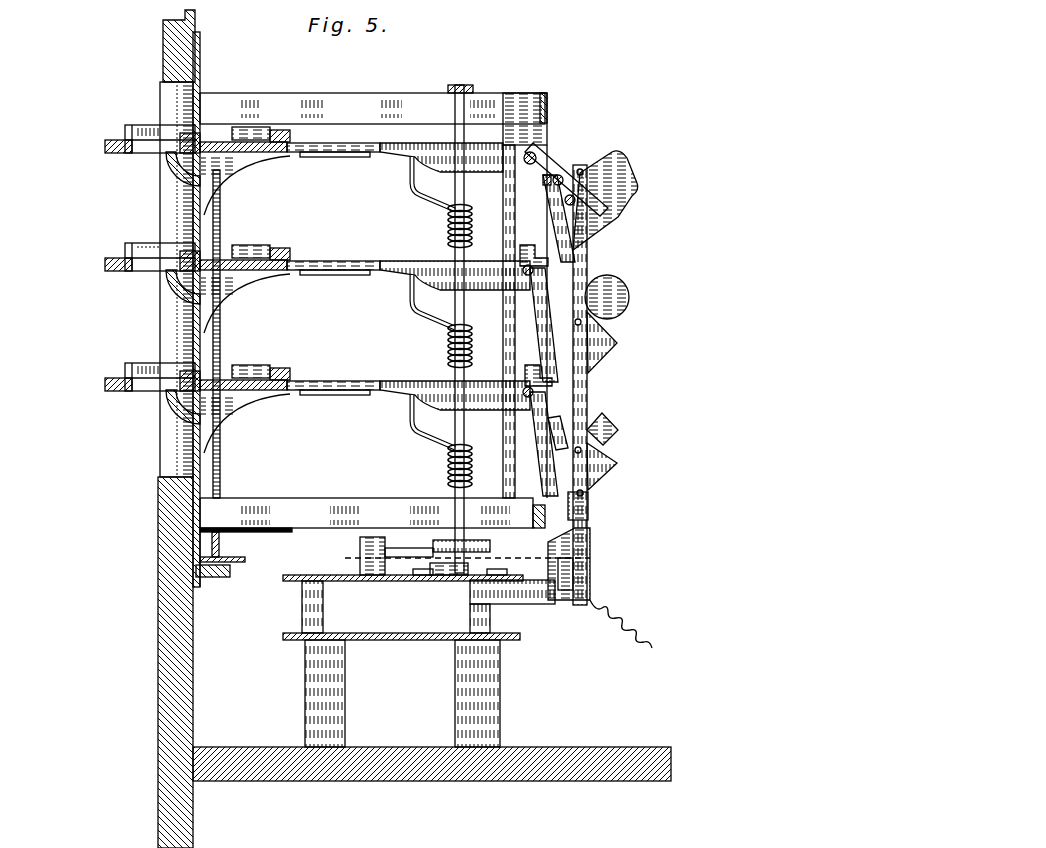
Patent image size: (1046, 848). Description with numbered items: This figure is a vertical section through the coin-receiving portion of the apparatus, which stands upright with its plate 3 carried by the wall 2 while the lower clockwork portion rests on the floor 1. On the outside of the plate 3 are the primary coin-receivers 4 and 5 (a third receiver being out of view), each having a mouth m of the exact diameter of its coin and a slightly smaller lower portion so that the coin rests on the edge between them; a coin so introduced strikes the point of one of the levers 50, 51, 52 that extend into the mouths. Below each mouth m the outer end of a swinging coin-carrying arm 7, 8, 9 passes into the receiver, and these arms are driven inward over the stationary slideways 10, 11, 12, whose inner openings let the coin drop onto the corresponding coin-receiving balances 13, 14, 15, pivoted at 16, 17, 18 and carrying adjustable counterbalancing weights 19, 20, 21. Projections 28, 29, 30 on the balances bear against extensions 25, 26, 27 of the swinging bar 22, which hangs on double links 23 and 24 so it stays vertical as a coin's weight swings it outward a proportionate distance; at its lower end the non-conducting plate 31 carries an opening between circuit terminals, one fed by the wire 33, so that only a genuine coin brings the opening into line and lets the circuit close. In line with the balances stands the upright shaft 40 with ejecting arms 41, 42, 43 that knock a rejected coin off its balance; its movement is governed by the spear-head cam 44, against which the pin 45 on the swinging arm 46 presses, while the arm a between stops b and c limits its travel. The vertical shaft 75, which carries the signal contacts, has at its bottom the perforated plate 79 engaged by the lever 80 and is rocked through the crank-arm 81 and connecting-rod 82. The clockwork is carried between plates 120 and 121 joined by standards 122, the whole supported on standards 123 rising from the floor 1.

The floor 1 is at (410, 768).
The wall 2 is at (176, 622).
The plate 3 is at (185, 212).
The primary coin-receiver 4 is at (105, 386).
The primary coin-receiver 5 is at (105, 266).
The coin-carrying arm 7 is at (222, 378).
The coin-carrying arm 8 is at (222, 258).
The coin-carrying arm 9 is at (222, 127).
The stationary slideway 10 is at (277, 392).
The stationary slideway 11 is at (277, 272).
The stationary slideway 12 is at (292, 150).
The coin-receiving balance 13 is at (432, 386).
The coin-receiving balance 14 is at (432, 266).
The coin-receiving balance 15 is at (432, 148).
The pivot 16 is at (548, 415).
The pivot 17 is at (570, 303).
The pivot 18 is at (540, 162).
The counterbalancing-weight 19 is at (618, 430).
The counterbalancing-weight 20 is at (628, 288).
The counterbalancing-weight 21 is at (624, 170).
The swinging bar 22 is at (586, 400).
The swinging link 23 is at (556, 441).
The swinging link 24 is at (566, 226).
The extension 25 is at (590, 510).
The extension 26 is at (580, 380).
The extension 27 is at (539, 264).
The projection 28 is at (522, 490).
The projection 29 is at (522, 366).
The projection 30 is at (537, 250).
The non-conducting plate 31 is at (592, 560).
The wire 33 is at (633, 625).
The upright shaft 40 is at (466, 110).
The arm 41 is at (414, 433).
The arm 42 is at (410, 307).
The arm 43 is at (410, 185).
The cam 44 is at (480, 555).
The pin 45 is at (470, 548).
The swinging arm 46 is at (410, 553).
The lever 50 is at (175, 404).
The lever 51 is at (203, 276).
The lever 52 is at (186, 140).
The shaft 75 is at (221, 446).
The plate 79 is at (232, 566).
The lever 80 is at (219, 548).
The crank-arm 81 is at (198, 548).
The connecting-rod 82 is at (246, 543).
The plate 120 is at (388, 641).
The plate 121 is at (322, 560).
The standard 122 is at (302, 637).
The standard 123 is at (318, 698).
The arm a is at (446, 573).
The stop b is at (413, 573).
The stop c is at (507, 573).
The mouth m is at (128, 125).
The shaft o is at (105, 146).